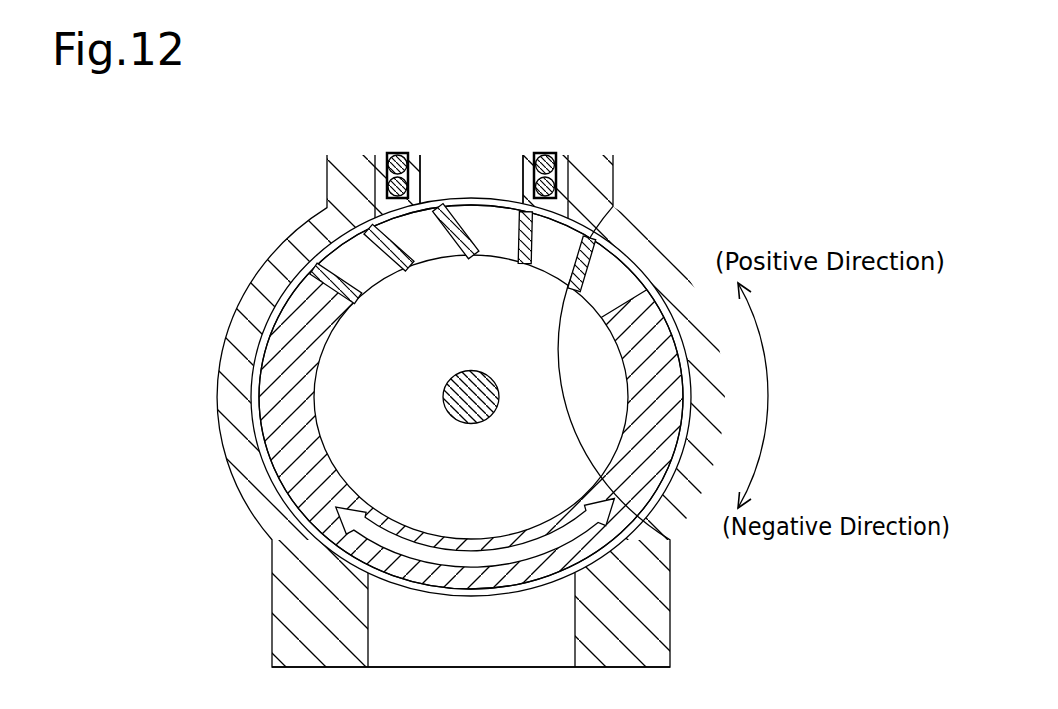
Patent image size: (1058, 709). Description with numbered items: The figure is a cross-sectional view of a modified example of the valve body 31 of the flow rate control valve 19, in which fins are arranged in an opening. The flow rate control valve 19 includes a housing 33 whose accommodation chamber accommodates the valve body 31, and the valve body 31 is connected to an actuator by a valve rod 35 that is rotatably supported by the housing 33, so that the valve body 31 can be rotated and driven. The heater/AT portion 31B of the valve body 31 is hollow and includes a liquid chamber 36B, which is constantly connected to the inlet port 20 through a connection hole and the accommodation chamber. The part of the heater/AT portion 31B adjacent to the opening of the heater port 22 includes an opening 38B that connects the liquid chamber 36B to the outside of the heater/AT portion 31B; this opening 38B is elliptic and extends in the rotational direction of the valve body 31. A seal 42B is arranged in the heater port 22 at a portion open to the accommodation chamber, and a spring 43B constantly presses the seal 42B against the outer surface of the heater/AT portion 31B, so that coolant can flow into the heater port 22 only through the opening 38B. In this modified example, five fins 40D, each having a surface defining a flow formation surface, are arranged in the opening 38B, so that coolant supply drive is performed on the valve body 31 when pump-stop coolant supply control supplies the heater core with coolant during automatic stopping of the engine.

The flow rate control valve 19 is at (172, 250).
The inlet port 20 is at (470, 659).
The heater port 22 is at (505, 168).
The valve body 31 is at (471, 397).
The heater/AT portion 31B is at (475, 589).
The housing 33 is at (224, 447).
The valve rod 35 is at (499, 404).
The liquid chamber 36B is at (471, 397).
The opening 38B is at (480, 217).
The fins 40D is at (468, 262).
The seal 42B is at (397, 153).
The spring 43B is at (570, 178).